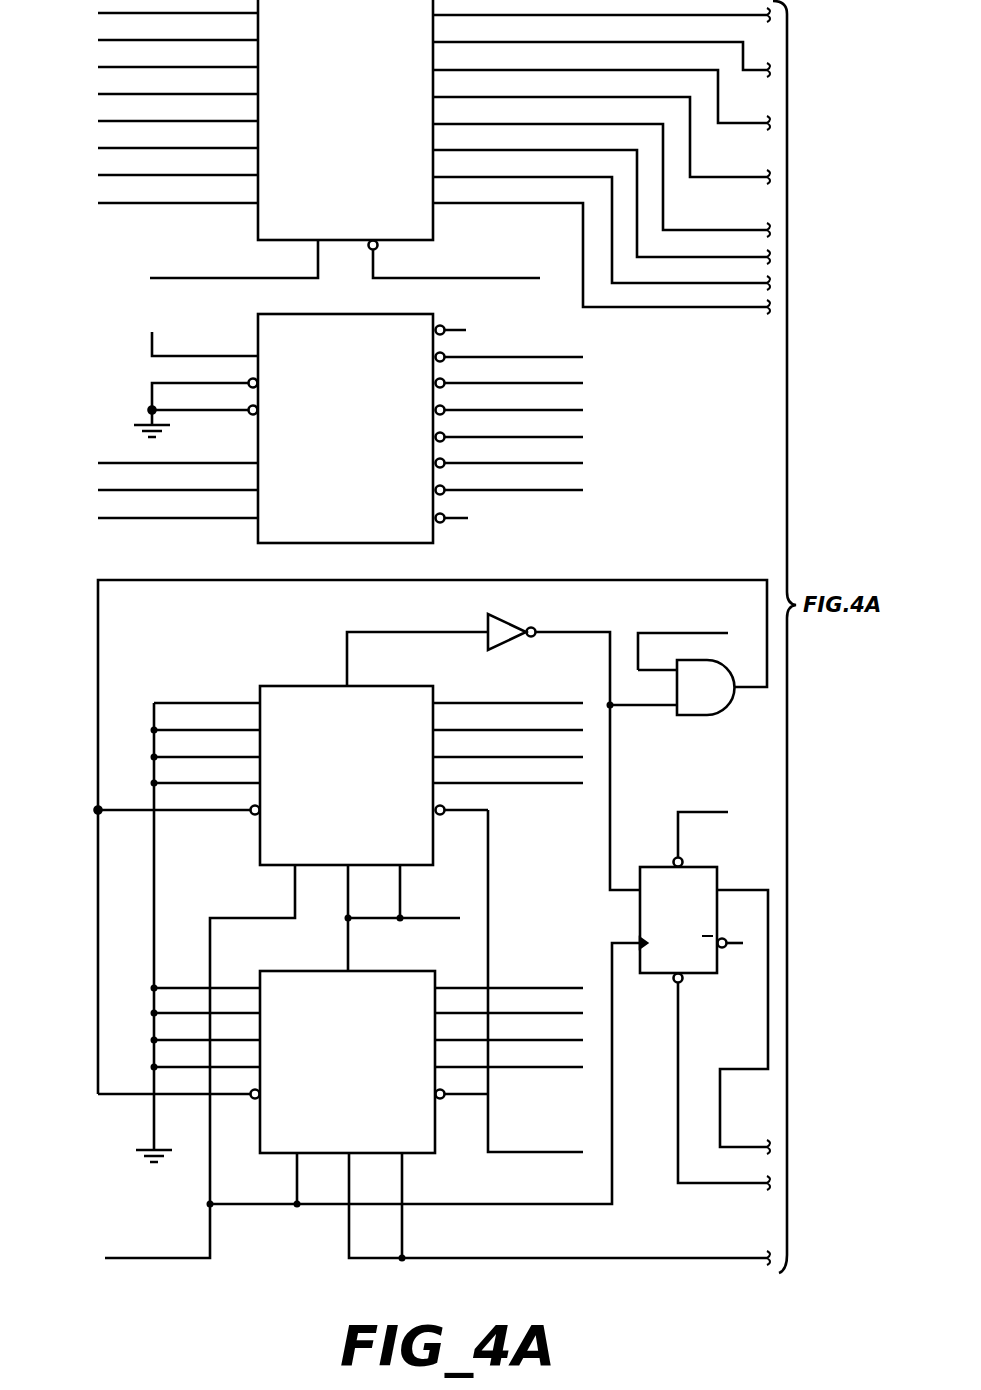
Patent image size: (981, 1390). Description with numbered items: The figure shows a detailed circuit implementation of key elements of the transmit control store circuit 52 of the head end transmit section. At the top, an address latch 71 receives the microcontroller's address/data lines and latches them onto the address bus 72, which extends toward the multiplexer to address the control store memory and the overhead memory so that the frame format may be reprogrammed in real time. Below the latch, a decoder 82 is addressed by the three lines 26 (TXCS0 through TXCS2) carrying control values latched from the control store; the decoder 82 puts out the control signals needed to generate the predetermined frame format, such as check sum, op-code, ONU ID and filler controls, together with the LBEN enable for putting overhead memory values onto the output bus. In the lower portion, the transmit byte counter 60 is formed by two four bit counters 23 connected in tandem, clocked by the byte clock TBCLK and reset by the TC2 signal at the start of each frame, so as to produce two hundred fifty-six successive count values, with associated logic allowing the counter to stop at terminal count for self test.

The address latch 71 is at (358, 127).
The address bus 72 is at (93, 8).
The decoder 82 is at (360, 441).
The communications field lines 26 is at (93, 452).
The four bit counter 23 is at (360, 787).
The byte counter 60 is at (188, 918).
The transmit control store circuit 52 is at (811, 1168).